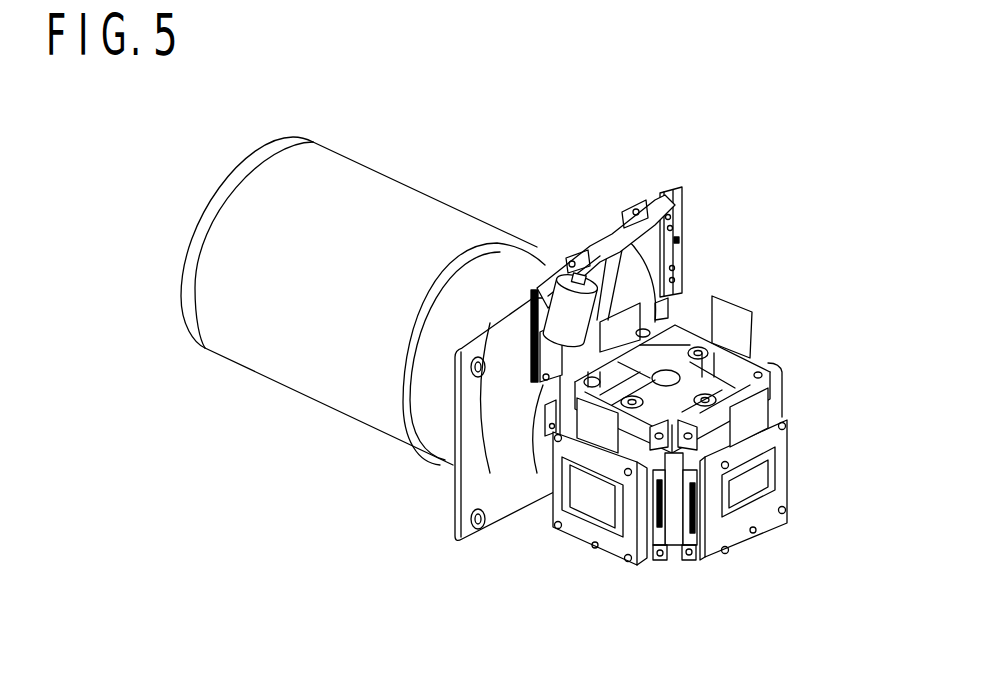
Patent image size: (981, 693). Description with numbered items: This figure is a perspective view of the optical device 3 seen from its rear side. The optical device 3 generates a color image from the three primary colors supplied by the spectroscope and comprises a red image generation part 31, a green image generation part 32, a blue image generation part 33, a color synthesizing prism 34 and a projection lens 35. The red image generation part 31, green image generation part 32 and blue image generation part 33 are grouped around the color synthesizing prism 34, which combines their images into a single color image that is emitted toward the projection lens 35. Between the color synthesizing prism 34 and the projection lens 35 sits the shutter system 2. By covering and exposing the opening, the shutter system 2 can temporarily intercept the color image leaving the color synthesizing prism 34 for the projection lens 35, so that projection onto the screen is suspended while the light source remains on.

The shutter system 2 is at (612, 225).
The optical device 3 is at (553, 535).
The red image generation part 31 is at (613, 547).
The green image generation part 32 is at (773, 513).
The blue image generation part 33 is at (763, 360).
The color synthesizing prism 34 is at (722, 360).
The projection lens 35 is at (352, 355).